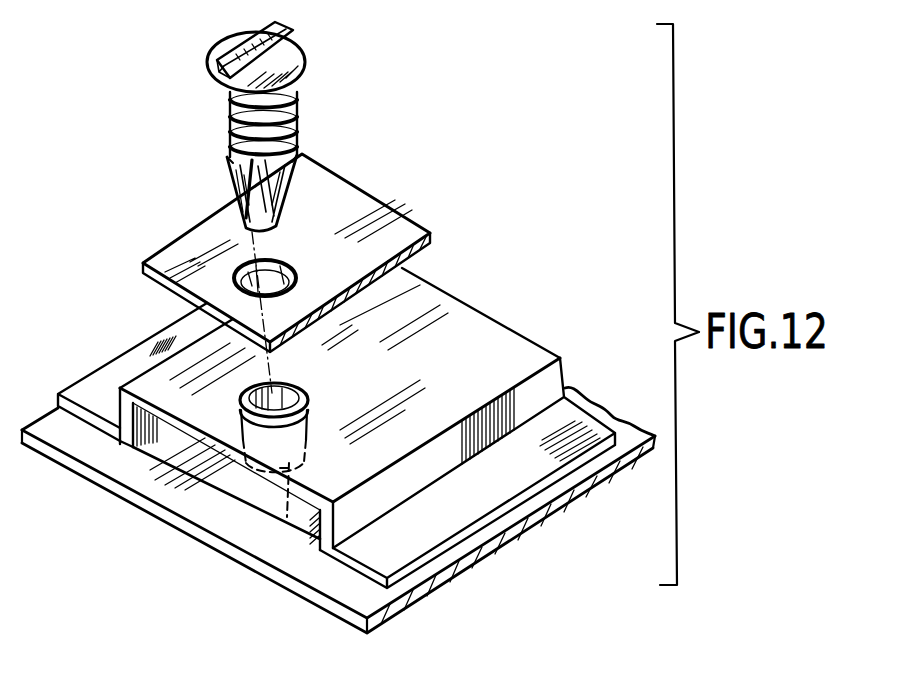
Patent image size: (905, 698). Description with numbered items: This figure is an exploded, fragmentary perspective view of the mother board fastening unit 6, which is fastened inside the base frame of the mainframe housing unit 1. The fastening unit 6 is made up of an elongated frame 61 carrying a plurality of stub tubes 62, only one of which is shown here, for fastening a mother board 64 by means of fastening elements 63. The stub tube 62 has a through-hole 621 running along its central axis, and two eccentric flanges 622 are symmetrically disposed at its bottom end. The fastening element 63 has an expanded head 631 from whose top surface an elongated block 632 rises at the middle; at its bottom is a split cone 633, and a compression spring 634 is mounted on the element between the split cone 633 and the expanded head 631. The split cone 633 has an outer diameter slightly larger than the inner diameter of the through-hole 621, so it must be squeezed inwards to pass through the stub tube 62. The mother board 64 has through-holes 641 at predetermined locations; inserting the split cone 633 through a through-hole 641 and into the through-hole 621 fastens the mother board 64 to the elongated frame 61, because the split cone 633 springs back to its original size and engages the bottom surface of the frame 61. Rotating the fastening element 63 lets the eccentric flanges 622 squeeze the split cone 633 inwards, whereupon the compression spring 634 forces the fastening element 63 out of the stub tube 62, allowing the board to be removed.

The mainframe housing unit 1 is at (290, 595).
The mother board fastening unit 6 is at (104, 254).
The elongated frame 61 is at (527, 353).
The stub tube 62 is at (308, 450).
The through-hole 621 is at (285, 395).
The eccentric flange 622 is at (287, 509).
The fastening element 63 is at (270, 200).
The expanded head 631 is at (300, 54).
The elongated block 632 is at (228, 33).
The split cone 633 is at (210, 160).
The compression spring 634 is at (232, 134).
The mother board 64 is at (317, 253).
The through-hole 641 is at (240, 270).